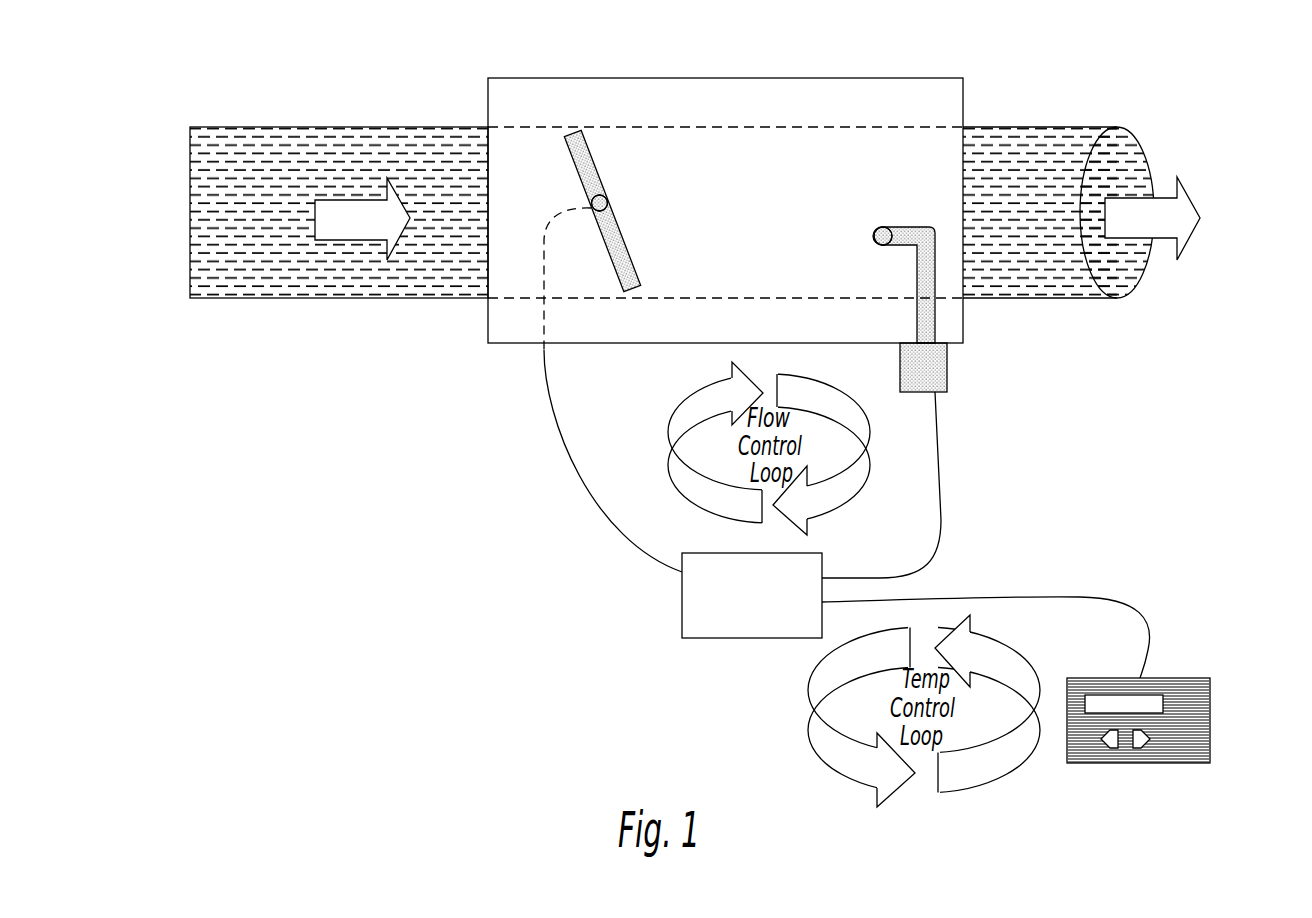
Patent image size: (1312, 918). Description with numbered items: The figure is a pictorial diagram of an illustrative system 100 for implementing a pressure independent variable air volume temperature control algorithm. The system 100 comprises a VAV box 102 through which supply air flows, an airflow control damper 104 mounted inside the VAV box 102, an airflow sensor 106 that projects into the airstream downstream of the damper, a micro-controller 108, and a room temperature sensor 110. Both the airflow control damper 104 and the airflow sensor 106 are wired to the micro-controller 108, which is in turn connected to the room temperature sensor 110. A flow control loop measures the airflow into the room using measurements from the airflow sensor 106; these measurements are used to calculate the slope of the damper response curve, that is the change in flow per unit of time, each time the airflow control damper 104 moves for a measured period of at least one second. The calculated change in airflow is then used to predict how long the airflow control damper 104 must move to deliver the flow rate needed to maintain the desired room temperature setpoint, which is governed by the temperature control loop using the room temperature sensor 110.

The system 100 is at (1203, 86).
The VAV box 102 is at (568, 78).
The airflow control damper 104 is at (627, 243).
The airflow sensor 106 is at (948, 368).
The micro-controller 108 is at (700, 638).
The room temperature sensor 110 is at (1163, 678).